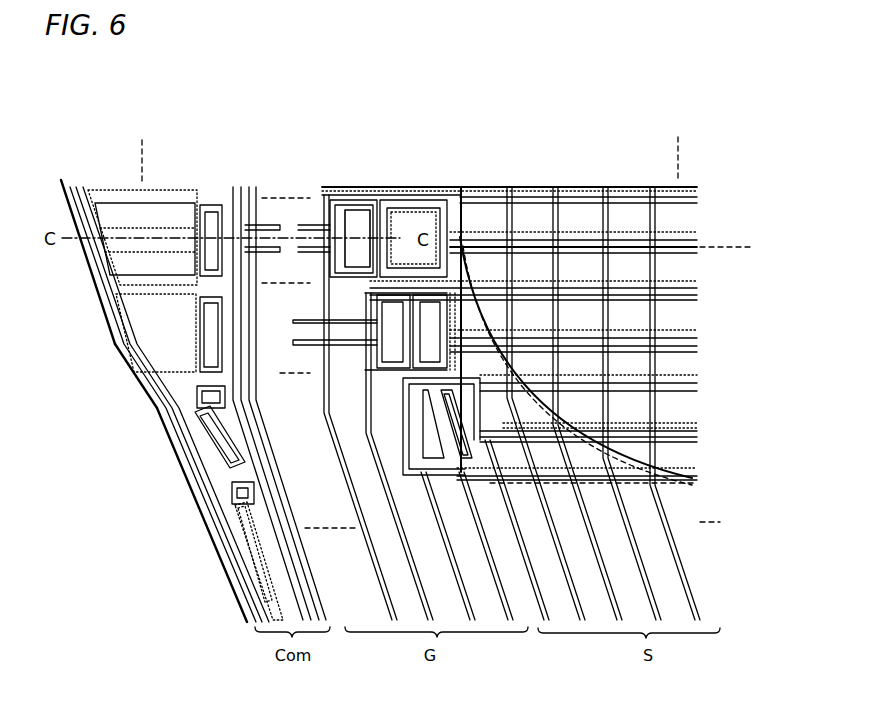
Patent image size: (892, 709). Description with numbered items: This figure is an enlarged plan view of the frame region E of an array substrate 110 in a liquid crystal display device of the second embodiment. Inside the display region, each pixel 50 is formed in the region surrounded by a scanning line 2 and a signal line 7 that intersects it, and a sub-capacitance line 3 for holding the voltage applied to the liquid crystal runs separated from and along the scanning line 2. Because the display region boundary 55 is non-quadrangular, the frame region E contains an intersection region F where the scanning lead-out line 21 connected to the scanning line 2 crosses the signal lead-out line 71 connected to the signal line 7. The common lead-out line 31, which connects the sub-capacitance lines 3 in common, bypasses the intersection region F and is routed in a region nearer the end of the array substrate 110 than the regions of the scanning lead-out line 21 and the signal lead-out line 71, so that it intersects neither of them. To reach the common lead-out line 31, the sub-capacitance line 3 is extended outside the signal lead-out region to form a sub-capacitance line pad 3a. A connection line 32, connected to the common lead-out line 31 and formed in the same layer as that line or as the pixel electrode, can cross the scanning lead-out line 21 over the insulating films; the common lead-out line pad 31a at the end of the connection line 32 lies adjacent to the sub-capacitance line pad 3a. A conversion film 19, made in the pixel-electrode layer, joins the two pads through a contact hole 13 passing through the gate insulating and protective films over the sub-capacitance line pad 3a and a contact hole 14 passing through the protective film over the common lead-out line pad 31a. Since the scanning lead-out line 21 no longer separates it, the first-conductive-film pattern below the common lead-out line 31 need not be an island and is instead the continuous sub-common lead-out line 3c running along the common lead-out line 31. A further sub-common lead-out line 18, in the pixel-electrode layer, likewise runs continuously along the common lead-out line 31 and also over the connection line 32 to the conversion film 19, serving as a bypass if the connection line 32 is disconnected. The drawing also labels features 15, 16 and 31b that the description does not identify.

The scanning line 2 is at (509, 163).
The sub-capacitance line 3 is at (533, 212).
The sub-capacitance line pad 3a is at (425, 181).
The sub-common lead-out line 3c is at (185, 389).
The signal line 7 is at (535, 371).
The contact hole 13 is at (406, 297).
The contact hole 14 is at (369, 195).
The contact hole 15 is at (210, 341).
The common wiring 16 is at (183, 372).
The sub-common lead-out line 18 is at (181, 373).
The conversion film 19 is at (413, 200).
The scanning lead-out line 21 is at (418, 441).
The common lead-out line 31 is at (190, 357).
The common lead-out line pad 31a is at (353, 187).
The common line pad 31b is at (194, 299).
The connection line 32 is at (311, 234).
The pixel 50 is at (656, 118).
The display region boundary 55 is at (597, 361).
The signal lead-out line 71 is at (626, 437).
The array substrate 110 is at (101, 422).
The frame region E is at (176, 432).
The intersection region F is at (621, 361).